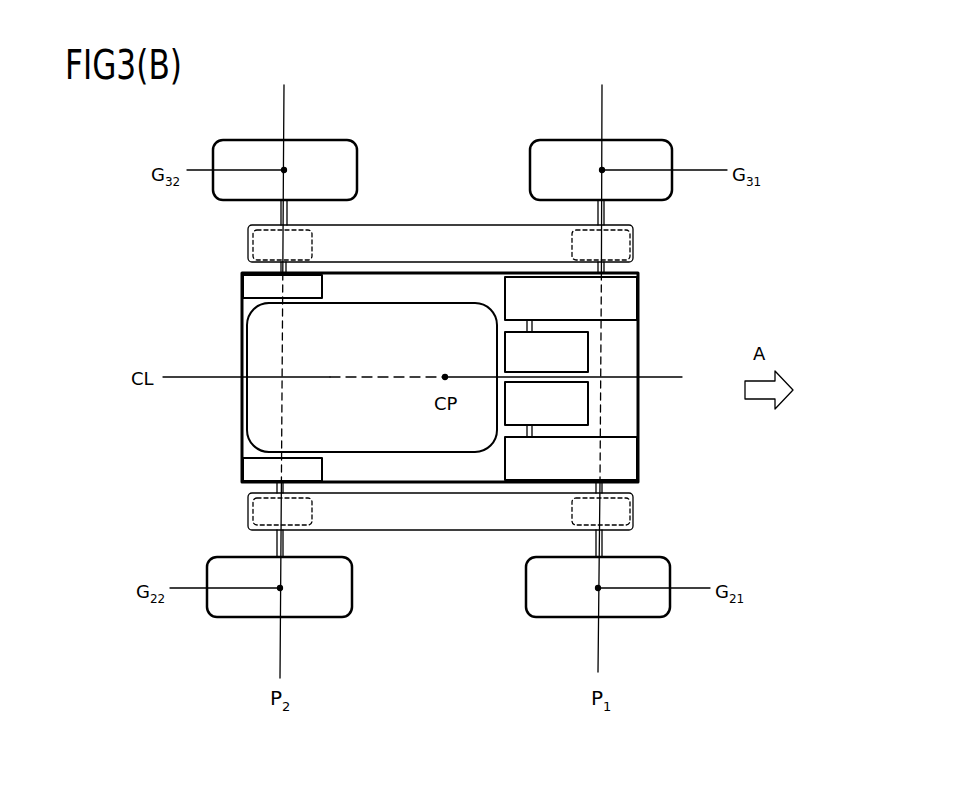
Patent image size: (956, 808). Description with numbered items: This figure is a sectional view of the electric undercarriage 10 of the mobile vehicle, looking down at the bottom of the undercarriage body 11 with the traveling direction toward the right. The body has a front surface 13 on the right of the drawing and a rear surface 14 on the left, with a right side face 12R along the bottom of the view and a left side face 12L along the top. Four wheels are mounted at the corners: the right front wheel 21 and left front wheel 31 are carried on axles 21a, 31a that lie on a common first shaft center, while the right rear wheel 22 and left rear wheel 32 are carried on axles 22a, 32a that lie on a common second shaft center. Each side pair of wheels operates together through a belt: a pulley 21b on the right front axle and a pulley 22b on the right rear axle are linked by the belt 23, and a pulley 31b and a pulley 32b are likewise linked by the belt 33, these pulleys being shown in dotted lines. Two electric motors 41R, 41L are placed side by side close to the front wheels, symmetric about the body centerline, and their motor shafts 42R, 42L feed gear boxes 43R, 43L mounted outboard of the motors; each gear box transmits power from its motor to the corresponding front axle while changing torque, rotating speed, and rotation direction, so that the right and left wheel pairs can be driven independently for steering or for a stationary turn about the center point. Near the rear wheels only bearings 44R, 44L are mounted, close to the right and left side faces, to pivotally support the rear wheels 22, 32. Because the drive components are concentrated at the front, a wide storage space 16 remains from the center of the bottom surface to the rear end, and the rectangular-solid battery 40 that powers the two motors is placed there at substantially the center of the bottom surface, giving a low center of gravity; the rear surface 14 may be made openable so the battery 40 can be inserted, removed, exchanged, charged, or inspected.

The electric undercarriage 10 is at (712, 105).
The undercarriage body 11 is at (385, 272).
The left side face 12L is at (435, 270).
The right side face 12R is at (455, 485).
The front surface 13 is at (640, 364).
The rear surface 14 is at (242, 389).
The storage space 16 is at (420, 476).
The front wheel 21 is at (640, 613).
The axle 21a is at (590, 560).
The pulley 21b is at (632, 509).
The rear wheel 22 is at (238, 613).
The axle 22a is at (291, 560).
The pulley 22b is at (250, 509).
The belt 23 is at (384, 522).
The front wheel 31 is at (636, 150).
The axle 31a is at (592, 193).
The pulley 31b is at (630, 240).
The rear wheel 32 is at (249, 150).
The axle 32a is at (297, 193).
The pulley 32b is at (250, 241).
The belt 33 is at (484, 232).
The battery 40 is at (260, 346).
The electric motor 41L is at (582, 354).
The electric motor 41R is at (582, 408).
The motor shaft 42L is at (530, 328).
The motor shaft 42R is at (530, 430).
The gear box 43L is at (625, 290).
The gear box 43R is at (625, 477).
The bearing 44L is at (250, 288).
The bearing 44R is at (250, 468).